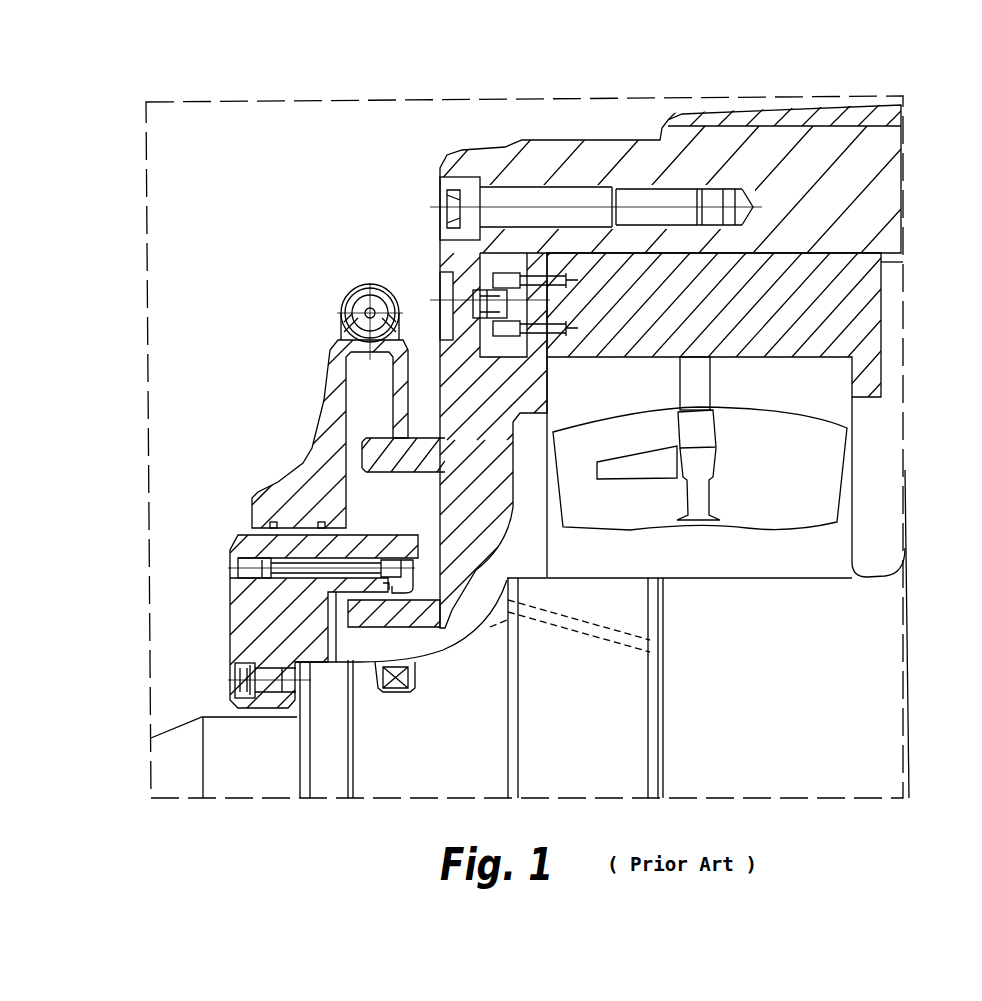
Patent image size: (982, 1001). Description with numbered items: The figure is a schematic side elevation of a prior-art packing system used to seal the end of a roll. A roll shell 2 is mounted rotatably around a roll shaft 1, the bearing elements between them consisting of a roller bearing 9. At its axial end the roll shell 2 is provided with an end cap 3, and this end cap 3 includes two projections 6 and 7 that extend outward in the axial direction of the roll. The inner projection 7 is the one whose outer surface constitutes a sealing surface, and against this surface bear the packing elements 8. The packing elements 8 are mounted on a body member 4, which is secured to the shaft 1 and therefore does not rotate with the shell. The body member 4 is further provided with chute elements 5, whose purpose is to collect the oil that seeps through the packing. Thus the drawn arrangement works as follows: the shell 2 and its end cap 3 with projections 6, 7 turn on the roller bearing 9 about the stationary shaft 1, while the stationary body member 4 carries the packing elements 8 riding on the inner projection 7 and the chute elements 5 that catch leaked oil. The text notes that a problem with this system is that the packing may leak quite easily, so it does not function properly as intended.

The roll shaft 1 is at (867, 603).
The roll shell 2 is at (598, 160).
The end cap 3 is at (437, 163).
The body member 4 is at (245, 633).
The chute elements 5 is at (325, 432).
The projection 6 is at (374, 455).
The inner projection 7 is at (367, 640).
The packing elements 8 is at (418, 572).
The roller bearing 9 is at (855, 430).